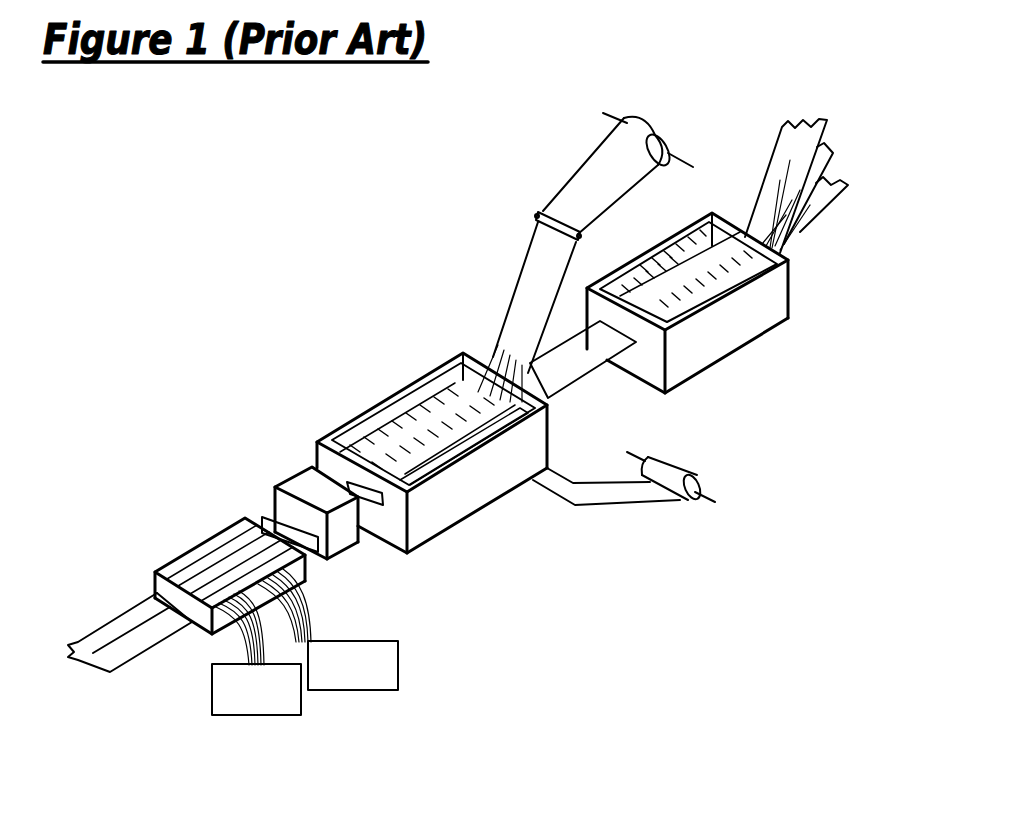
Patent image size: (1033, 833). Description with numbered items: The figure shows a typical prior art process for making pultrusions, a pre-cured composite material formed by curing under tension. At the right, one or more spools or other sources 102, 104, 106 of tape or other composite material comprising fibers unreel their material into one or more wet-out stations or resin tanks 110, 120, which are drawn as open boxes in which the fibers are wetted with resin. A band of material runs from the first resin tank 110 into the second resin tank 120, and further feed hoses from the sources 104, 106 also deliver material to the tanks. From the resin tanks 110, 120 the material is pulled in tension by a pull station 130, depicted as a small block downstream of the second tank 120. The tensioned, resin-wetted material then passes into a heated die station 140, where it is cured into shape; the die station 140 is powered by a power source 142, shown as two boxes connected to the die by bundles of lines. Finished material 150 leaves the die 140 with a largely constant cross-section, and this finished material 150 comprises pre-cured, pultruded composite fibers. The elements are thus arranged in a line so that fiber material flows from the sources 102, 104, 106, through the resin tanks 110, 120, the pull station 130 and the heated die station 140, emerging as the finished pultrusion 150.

The source of composite material 102 is at (800, 117).
The source of composite material 104 is at (690, 495).
The source of composite material 106 is at (602, 153).
The wet-out station or resin tank 110 is at (733, 352).
The wet-out station or resin tank 120 is at (458, 522).
The pull station 130 is at (292, 474).
The heated die station 140 is at (227, 528).
The power source 142 is at (305, 685).
The finished material 150 is at (130, 605).